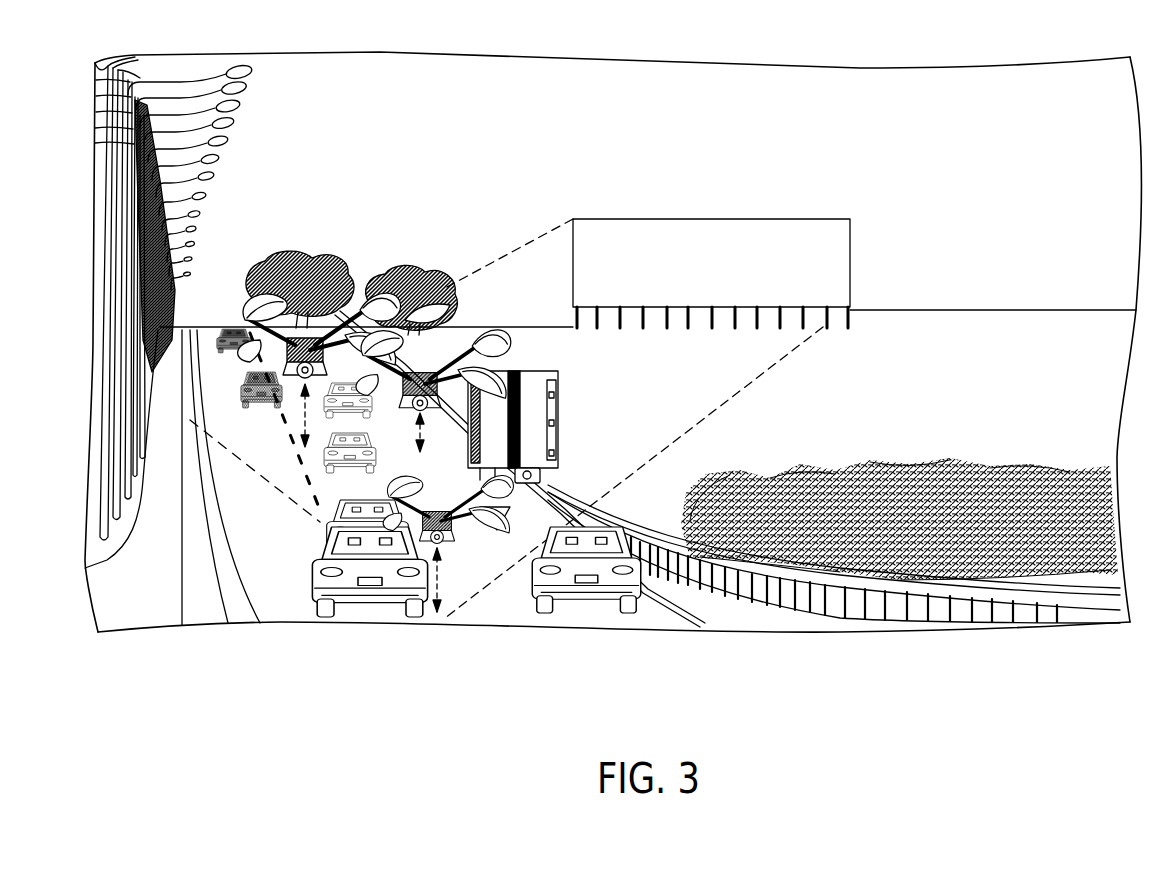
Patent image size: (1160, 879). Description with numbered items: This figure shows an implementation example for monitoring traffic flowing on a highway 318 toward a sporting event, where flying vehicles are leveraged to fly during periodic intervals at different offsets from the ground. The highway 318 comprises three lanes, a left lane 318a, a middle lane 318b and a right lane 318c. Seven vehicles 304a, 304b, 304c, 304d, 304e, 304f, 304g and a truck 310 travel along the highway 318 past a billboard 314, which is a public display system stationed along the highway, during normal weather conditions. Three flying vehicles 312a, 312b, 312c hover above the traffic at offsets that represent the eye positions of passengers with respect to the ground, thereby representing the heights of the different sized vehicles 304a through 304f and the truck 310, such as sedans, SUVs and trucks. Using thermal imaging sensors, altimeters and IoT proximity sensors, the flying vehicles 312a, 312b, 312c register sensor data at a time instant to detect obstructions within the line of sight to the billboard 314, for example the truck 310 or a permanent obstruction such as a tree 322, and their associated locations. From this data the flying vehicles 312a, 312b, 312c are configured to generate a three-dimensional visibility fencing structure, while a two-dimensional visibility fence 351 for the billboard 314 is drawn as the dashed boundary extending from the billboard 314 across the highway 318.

The vehicle 304a is at (232, 338).
The vehicle 304b is at (260, 386).
The vehicle 304c is at (320, 415).
The vehicle 304d is at (323, 453).
The vehicle 304e is at (323, 513).
The vehicle 304f is at (347, 600).
The vehicle 304g is at (565, 597).
The truck 310 is at (558, 425).
The flying vehicle 312a is at (353, 307).
The flying vehicle 312b is at (478, 376).
The flying vehicle 312c is at (448, 593).
The billboard 314 is at (727, 277).
The highway 318 is at (259, 254).
The lane 318a is at (277, 613).
The lane 318b is at (483, 607).
The lane 318c is at (775, 615).
The trees / environment object 322 is at (448, 325).
The two-dimensional visibility fence 351 is at (733, 388).